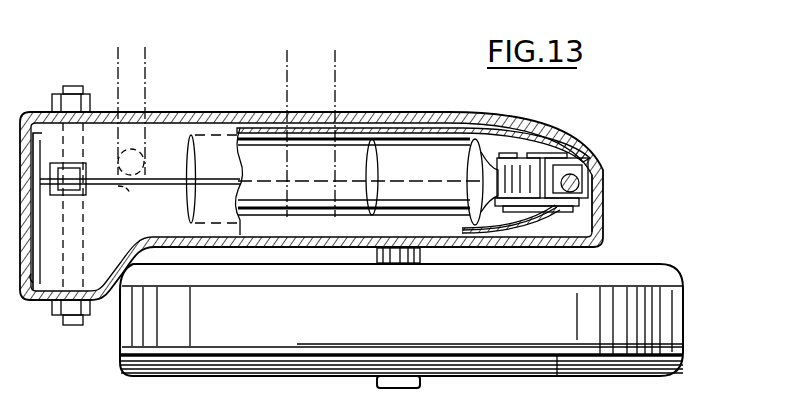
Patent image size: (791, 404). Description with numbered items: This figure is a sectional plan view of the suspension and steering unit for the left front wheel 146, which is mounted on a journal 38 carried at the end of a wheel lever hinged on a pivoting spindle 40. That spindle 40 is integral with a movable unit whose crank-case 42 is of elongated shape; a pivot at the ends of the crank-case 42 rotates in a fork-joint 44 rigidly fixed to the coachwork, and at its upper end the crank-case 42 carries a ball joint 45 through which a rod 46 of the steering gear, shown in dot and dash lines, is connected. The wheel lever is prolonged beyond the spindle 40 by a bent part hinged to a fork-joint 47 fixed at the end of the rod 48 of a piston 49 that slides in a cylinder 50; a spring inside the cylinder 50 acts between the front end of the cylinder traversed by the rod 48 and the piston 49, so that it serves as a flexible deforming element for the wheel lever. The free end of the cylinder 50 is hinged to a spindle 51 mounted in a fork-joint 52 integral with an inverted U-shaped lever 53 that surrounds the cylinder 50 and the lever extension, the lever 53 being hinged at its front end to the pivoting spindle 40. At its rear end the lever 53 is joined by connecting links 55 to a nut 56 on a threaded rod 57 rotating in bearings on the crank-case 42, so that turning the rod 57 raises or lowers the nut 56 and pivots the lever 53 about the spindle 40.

The journal 38 is at (418, 255).
The pivoting spindle 40 is at (87, 279).
The crank-case 42 is at (378, 118).
The fork-joint 44 is at (340, 62).
The ball joint 45 is at (140, 163).
The rod 46 is at (150, 60).
The fork-joint 47 is at (140, 166).
The rod 48 is at (130, 194).
The piston 49 is at (378, 153).
The cylinder 50 is at (183, 200).
The spindle 51 is at (512, 158).
The fork-joint 52 is at (522, 212).
The inverted U-shaped lever 53 is at (407, 122).
The connecting links 55 is at (552, 160).
The nut 56 is at (603, 193).
The threaded rod 57 is at (590, 165).
The left front wheel 146 is at (542, 380).